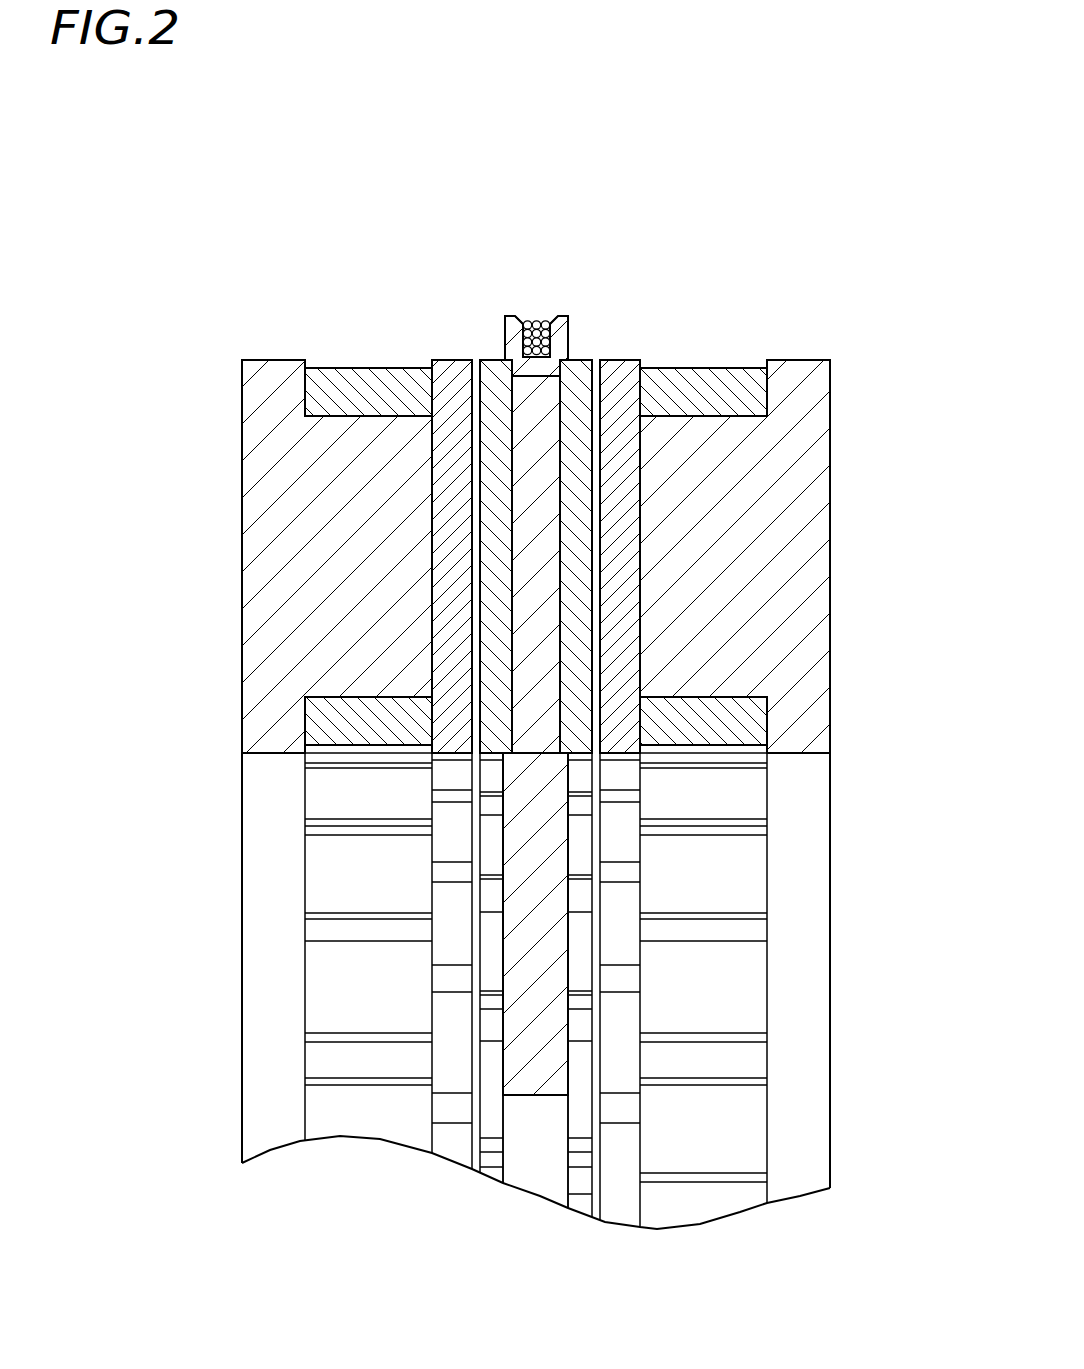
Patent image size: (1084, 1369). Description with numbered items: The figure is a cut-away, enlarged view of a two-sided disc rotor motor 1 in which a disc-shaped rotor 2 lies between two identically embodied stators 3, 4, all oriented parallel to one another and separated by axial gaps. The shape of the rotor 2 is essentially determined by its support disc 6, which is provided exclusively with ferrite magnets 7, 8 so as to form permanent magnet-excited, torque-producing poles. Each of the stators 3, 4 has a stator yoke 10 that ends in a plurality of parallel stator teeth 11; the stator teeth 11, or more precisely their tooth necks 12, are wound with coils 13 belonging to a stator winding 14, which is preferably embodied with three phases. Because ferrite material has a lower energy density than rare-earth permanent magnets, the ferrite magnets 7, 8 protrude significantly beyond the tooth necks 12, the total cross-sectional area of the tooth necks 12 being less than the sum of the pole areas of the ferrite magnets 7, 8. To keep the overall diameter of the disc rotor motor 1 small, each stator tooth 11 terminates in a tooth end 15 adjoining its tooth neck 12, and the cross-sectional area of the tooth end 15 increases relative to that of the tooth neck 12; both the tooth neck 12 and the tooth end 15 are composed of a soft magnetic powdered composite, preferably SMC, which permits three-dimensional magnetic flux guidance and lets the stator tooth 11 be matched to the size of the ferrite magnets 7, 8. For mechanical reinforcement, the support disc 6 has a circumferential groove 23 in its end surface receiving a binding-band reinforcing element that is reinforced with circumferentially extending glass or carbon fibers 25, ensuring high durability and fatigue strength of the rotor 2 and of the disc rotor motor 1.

The disc rotor motor 1 is at (793, 183).
The rotor 2 is at (532, 1137).
The stator 3 is at (799, 1160).
The stator 4 is at (275, 1118).
The support disc 6 is at (555, 343).
The ferrite magnet 7 is at (493, 447).
The ferrite magnet 8 is at (535, 480).
The stator yoke 10 is at (269, 1029).
The stator tooth 11 is at (420, 656).
The tooth neck 12 is at (350, 586).
The coil 13 is at (363, 390).
The stator winding 14 is at (324, 354).
The tooth end 15 is at (438, 492).
The circumferential groove 23 is at (512, 311).
The fibers 25 is at (537, 320).